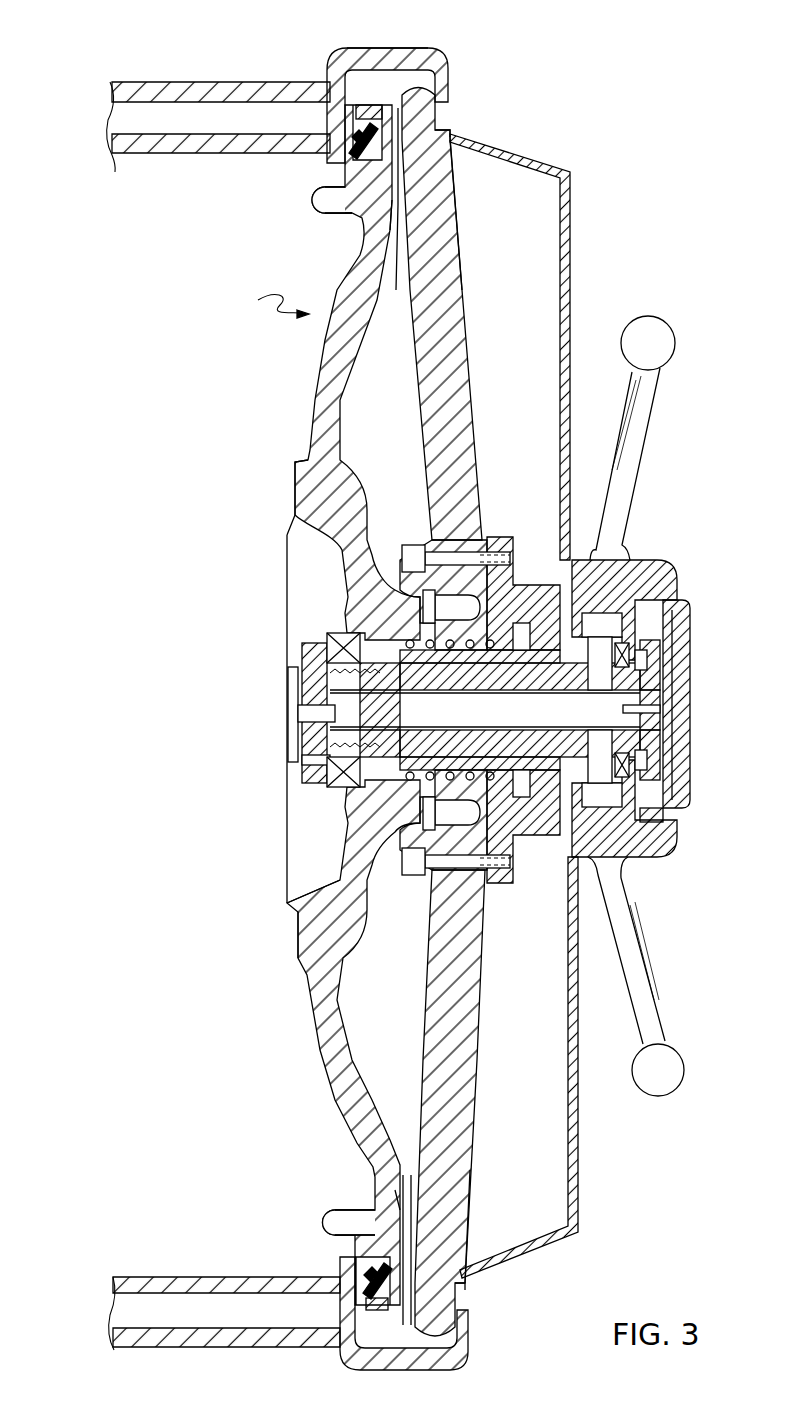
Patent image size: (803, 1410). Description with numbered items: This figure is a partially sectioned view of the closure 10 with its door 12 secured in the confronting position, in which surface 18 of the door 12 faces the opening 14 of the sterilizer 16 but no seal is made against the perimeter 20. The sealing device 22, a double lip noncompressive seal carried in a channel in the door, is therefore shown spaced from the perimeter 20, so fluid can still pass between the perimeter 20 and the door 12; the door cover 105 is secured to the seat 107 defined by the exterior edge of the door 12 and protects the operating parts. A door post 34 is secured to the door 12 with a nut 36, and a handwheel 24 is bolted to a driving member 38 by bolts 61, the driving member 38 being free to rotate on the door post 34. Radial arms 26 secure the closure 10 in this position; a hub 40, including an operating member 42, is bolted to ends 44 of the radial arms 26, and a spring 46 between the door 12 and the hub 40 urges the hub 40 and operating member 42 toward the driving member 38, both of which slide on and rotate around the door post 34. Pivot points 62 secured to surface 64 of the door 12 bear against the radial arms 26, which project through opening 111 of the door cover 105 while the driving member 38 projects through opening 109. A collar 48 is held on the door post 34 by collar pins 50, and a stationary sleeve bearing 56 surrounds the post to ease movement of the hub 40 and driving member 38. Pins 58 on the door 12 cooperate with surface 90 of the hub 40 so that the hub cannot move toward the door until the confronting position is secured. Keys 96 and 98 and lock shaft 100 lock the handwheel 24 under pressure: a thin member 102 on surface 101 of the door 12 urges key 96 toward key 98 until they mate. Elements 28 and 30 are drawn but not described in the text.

The closure 10 is at (260, 301).
The door 12 is at (332, 1052).
The opening 14 is at (330, 166).
The sterilizer 16 is at (153, 90).
The surface 18 is at (308, 398).
The perimeter 20 is at (343, 58).
The sealing device 22 is at (377, 143).
The handwheel 24 is at (637, 553).
The radial arms 26 is at (450, 335).
The cap top wall 28 is at (410, 47).
The rotor rim 30 is at (442, 213).
The door post 34 is at (350, 825).
The nut 36 is at (337, 643).
The driving member 38 is at (546, 613).
The hub 40 is at (505, 884).
The operating member 42 is at (510, 880).
The ends 44 is at (428, 488).
The spring 46 is at (413, 620).
The collar 48 is at (662, 822).
The collar pins 50 is at (637, 602).
The stationary sleeve bearing 56 is at (355, 855).
The pins 58 is at (448, 602).
The bolts 61 is at (662, 823).
The pivot points 62 is at (388, 226).
The surface 64 is at (403, 230).
The surface 90 is at (485, 790).
The key 96 is at (293, 688).
The key 98 is at (327, 762).
The lock shaft 100 is at (670, 683).
The surface 101 is at (292, 505).
The thin member 102 is at (287, 650).
The door cover 105 is at (565, 293).
The seat 107 is at (463, 1347).
The opening 109 is at (588, 556).
The opening 111 is at (450, 134).